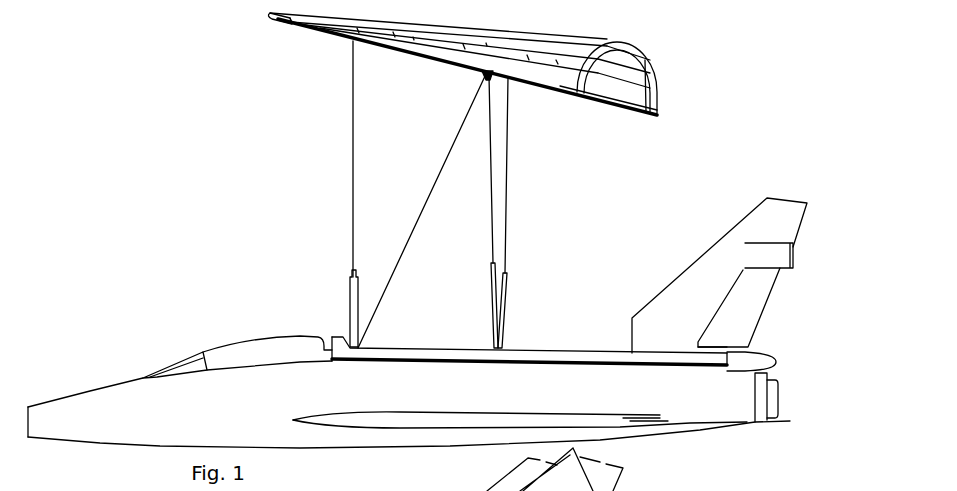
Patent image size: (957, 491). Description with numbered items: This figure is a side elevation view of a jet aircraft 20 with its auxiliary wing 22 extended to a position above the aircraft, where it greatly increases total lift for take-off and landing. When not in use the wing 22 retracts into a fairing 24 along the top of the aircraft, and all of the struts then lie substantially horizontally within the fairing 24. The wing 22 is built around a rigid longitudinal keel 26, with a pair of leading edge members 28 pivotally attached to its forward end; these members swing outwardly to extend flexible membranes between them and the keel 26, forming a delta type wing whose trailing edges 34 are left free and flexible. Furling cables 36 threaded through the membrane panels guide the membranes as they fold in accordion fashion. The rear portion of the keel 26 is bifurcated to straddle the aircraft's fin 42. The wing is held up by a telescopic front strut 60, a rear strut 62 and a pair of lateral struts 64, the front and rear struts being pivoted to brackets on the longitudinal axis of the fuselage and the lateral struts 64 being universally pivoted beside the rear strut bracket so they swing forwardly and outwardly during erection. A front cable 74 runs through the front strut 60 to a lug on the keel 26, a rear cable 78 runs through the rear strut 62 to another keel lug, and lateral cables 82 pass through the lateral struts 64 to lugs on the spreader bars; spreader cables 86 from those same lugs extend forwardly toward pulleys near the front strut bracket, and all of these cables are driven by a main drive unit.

The jet aircraft 20 is at (417, 323).
The auxiliary wing 22 is at (490, 81).
The fairing 24 is at (397, 354).
The keel 26 is at (637, 113).
The leading edge members 28 is at (430, 59).
The trailing edges 34 is at (638, 54).
The furling cables 36 is at (587, 53).
The fin 42 is at (658, 293).
The front strut 60 is at (350, 290).
The rear strut 62 is at (508, 292).
The lateral struts 64 is at (491, 290).
The front cable 74 is at (353, 152).
The rear cable 78 is at (509, 163).
The lateral cables 82 is at (491, 182).
The spreader cables 86 is at (443, 169).